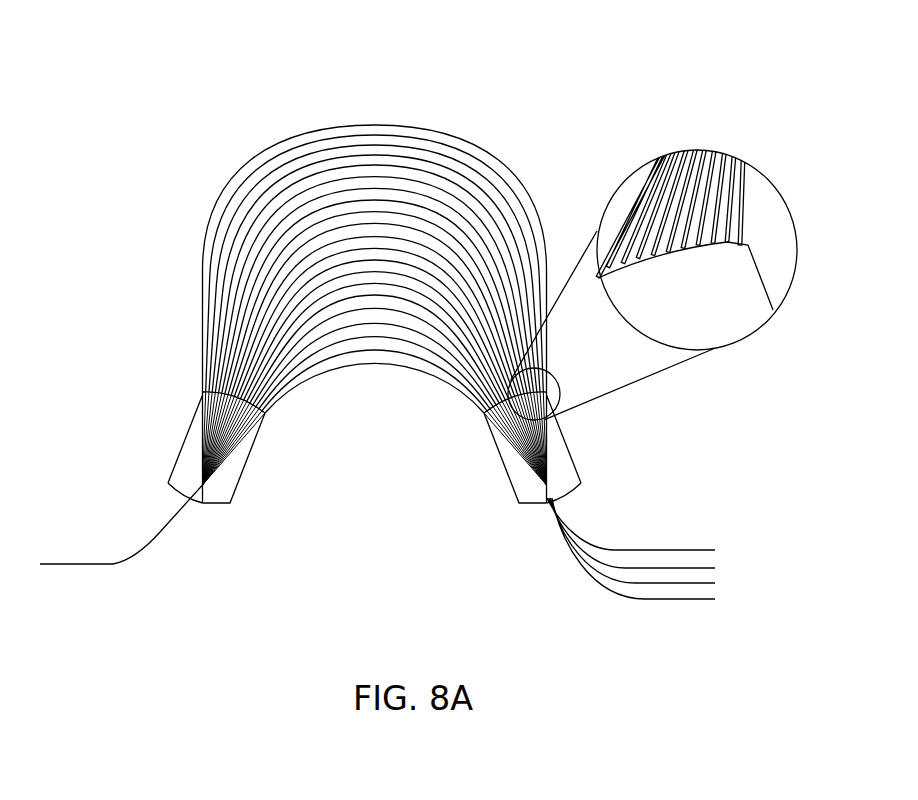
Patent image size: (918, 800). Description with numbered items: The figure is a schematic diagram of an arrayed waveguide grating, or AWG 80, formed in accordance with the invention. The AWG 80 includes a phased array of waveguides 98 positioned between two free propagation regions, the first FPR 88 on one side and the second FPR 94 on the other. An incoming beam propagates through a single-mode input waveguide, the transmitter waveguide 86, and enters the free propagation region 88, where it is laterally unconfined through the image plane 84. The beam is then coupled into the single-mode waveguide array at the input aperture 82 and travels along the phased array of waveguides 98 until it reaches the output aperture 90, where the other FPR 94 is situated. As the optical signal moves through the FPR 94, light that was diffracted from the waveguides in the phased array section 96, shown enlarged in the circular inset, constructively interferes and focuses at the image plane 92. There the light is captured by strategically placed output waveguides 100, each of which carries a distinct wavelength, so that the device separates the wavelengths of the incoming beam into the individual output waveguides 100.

The arrayed waveguide grating 80 is at (155, 49).
The input aperture 82 is at (201, 484).
The image plane 84 is at (168, 483).
The transmitter waveguide 86 is at (112, 564).
The free propagation region 88 is at (227, 490).
The output aperture 90 is at (543, 483).
The image plane 92 is at (513, 493).
The free propagation region 94 is at (573, 467).
The phased array section 96 is at (776, 174).
The phased array of waveguides 98 is at (386, 109).
The output waveguides 100 is at (660, 621).